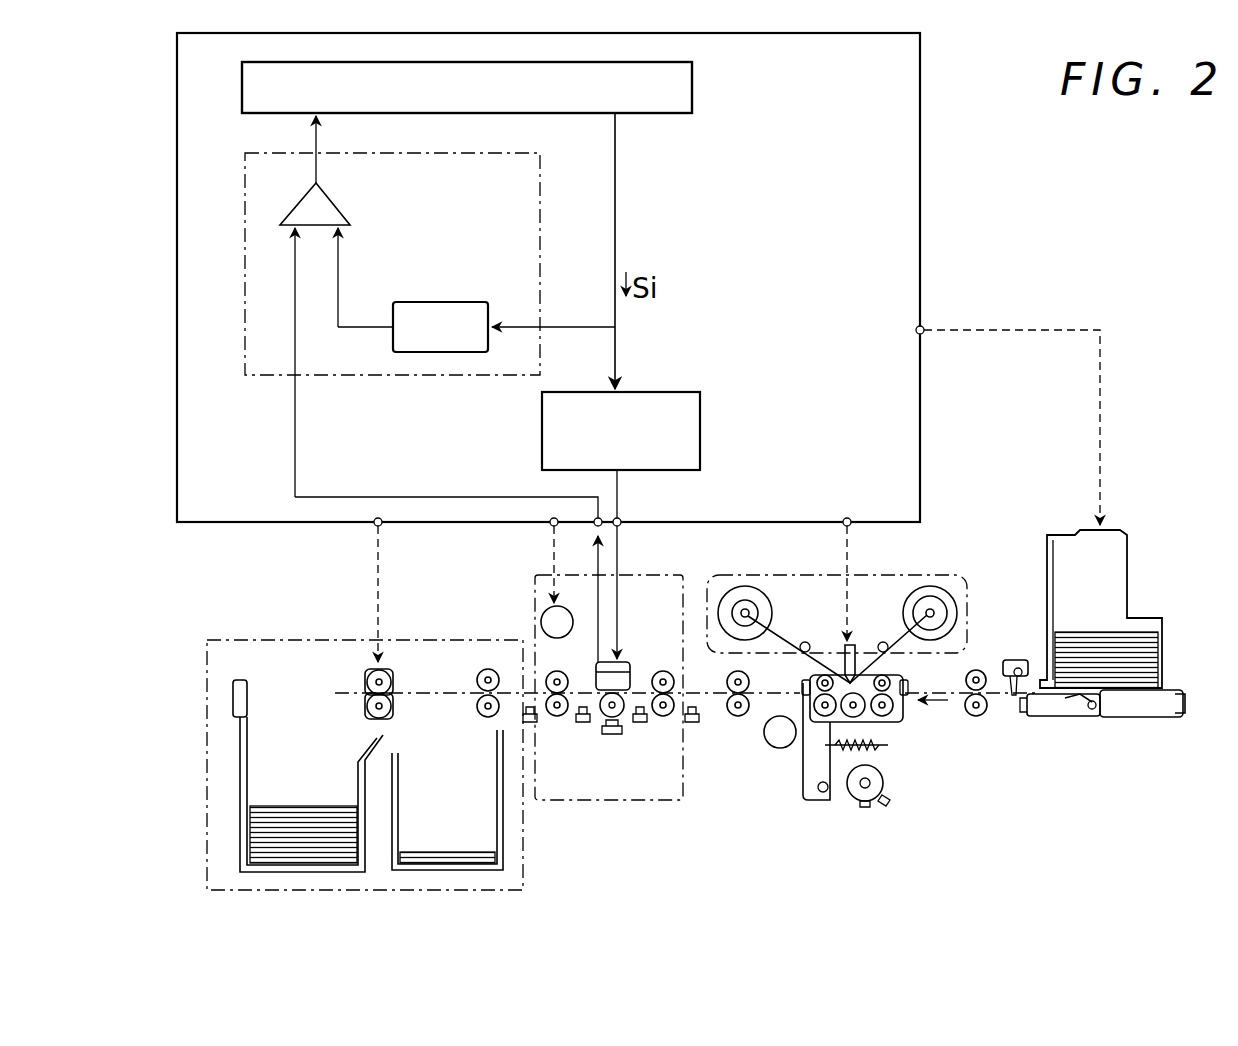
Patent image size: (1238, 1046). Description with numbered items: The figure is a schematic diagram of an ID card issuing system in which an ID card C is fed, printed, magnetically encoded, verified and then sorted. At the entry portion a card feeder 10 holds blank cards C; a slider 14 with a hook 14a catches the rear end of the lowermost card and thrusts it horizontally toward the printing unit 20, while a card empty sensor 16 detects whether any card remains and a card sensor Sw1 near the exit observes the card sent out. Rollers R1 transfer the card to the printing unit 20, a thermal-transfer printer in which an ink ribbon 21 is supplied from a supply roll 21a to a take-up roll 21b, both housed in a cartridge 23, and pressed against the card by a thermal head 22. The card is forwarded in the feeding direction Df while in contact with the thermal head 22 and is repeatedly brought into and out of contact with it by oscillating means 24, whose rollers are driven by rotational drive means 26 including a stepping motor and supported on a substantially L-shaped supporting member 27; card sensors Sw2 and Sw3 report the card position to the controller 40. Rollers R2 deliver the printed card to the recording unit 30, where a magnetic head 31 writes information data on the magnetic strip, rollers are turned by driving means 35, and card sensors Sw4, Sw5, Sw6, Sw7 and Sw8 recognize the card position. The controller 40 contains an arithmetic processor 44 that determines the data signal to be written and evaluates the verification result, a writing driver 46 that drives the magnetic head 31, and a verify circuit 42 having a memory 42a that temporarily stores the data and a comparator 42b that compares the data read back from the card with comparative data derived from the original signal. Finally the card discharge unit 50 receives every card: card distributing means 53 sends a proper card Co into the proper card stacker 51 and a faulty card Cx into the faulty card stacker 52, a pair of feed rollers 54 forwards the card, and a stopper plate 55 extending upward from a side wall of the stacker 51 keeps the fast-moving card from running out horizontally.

The card feeder 10 is at (1067, 527).
The slider 14 is at (1122, 718).
The hook 14a is at (1153, 720).
The card empty sensor 16 is at (1075, 710).
The printing unit 20 is at (945, 574).
The ink ribbon 21 is at (890, 640).
The supply roll 21a is at (935, 605).
The take-up roll 21b is at (750, 612).
The thermal head 22 is at (843, 655).
The cartridge 23 is at (718, 590).
The oscillating means 24 is at (896, 762).
The rotational drive means 26 is at (785, 750).
The supporting member 27 is at (893, 715).
The recording unit 30 is at (675, 805).
The magnetic head 31 is at (625, 660).
The driving means 35 is at (540, 612).
The controller 40 is at (921, 197).
The verify circuit 42 is at (245, 335).
The memory (RAM) 42a is at (455, 302).
The comparator 42b is at (325, 207).
The arithmetic processor 44 is at (692, 85).
The writing driver 46 is at (700, 420).
The card discharge unit 50 is at (207, 660).
The proper card stacker 51 is at (243, 775).
The faulty card stacker 52 is at (500, 820).
The card distributing means 53 is at (367, 680).
The pair of feed rollers 54 is at (478, 678).
The stopper plate 55 is at (240, 680).
The card sensor Sw1 is at (1015, 660).
The card sensor Sw2 is at (907, 684).
The card sensor Sw3 is at (806, 680).
The card sensor Sw4 is at (692, 725).
The card sensor Sw5 is at (640, 725).
The card sensor Sw6 is at (613, 738).
The card sensor Sw7 is at (583, 725).
The card sensor Sw8 is at (527, 705).
The rollers R1 is at (978, 718).
The rollers R2 is at (743, 718).
The ID card C is at (1095, 635).
The proper card Co is at (312, 815).
The faulty card Cx is at (440, 855).
The feeding direction Df is at (939, 718).